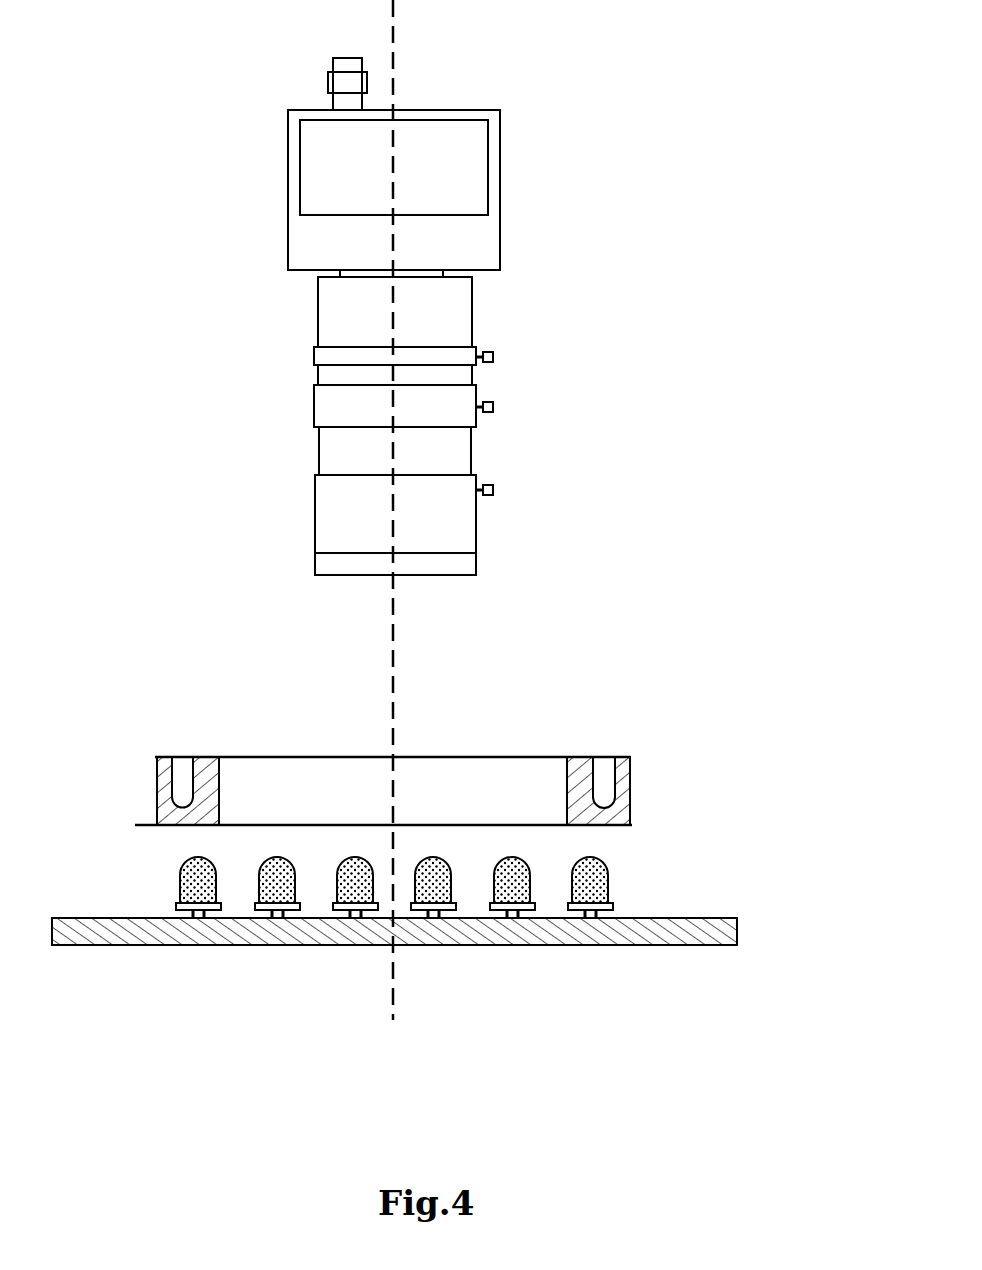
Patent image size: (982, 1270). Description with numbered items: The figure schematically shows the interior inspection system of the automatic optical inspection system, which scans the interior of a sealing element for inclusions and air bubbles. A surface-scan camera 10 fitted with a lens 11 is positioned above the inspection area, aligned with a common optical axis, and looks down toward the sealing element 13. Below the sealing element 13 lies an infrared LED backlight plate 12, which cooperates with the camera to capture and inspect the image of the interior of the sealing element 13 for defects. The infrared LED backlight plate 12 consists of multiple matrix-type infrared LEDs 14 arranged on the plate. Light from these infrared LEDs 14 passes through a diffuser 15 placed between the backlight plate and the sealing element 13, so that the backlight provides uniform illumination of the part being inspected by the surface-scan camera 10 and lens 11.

The surface-scan camera 10 is at (500, 167).
The lens 11 is at (470, 437).
The infrared LED backlight plate 12 is at (703, 930).
The sealing element 13 is at (615, 763).
The matrix-type infrared LEDs 14 is at (588, 875).
The diffuser 15 is at (650, 823).